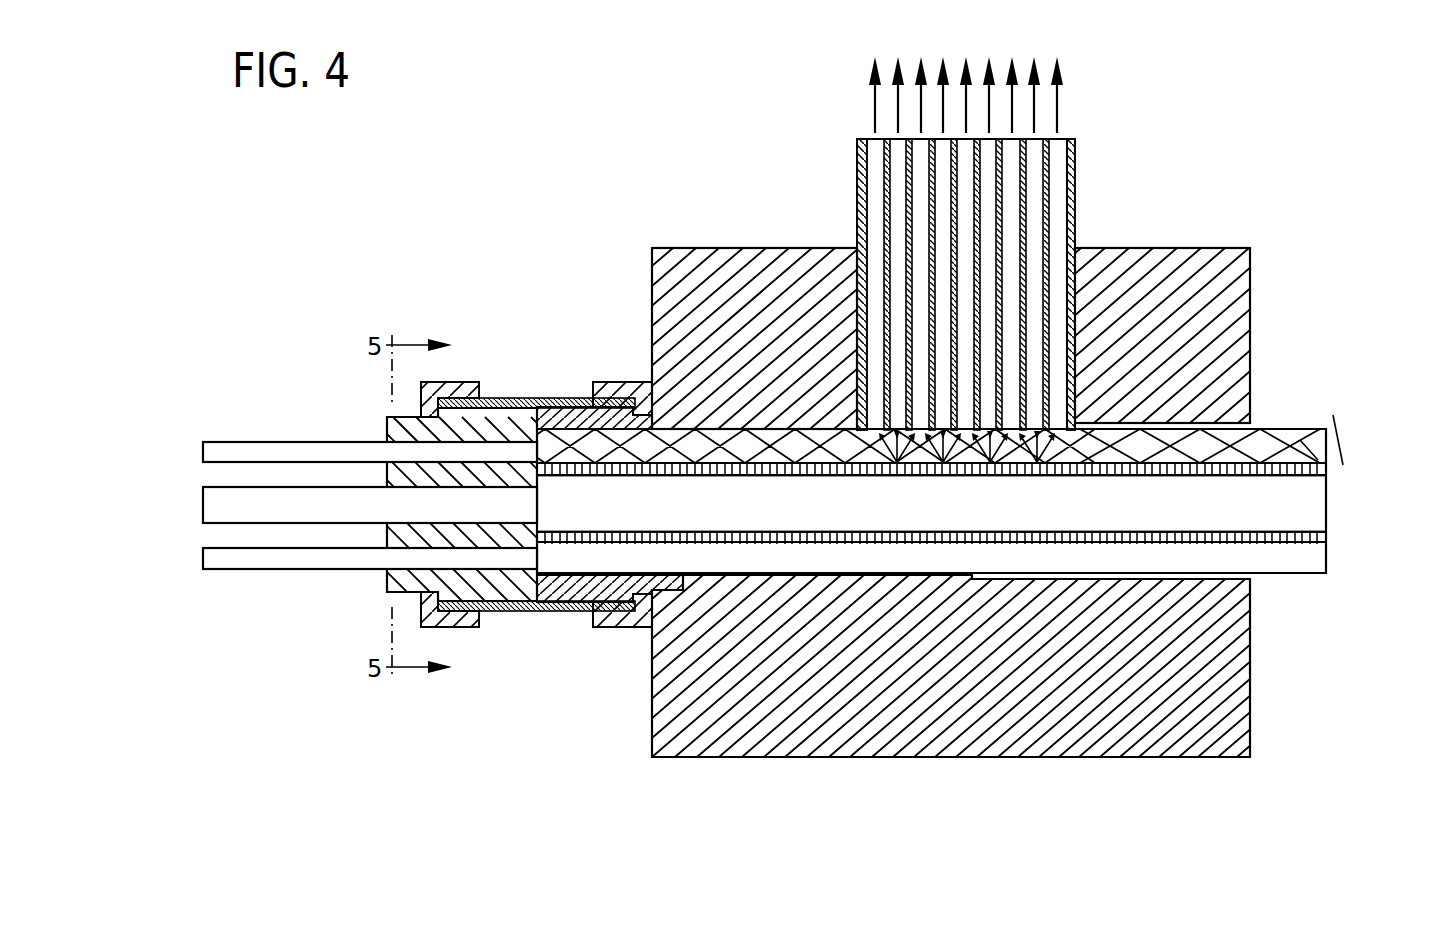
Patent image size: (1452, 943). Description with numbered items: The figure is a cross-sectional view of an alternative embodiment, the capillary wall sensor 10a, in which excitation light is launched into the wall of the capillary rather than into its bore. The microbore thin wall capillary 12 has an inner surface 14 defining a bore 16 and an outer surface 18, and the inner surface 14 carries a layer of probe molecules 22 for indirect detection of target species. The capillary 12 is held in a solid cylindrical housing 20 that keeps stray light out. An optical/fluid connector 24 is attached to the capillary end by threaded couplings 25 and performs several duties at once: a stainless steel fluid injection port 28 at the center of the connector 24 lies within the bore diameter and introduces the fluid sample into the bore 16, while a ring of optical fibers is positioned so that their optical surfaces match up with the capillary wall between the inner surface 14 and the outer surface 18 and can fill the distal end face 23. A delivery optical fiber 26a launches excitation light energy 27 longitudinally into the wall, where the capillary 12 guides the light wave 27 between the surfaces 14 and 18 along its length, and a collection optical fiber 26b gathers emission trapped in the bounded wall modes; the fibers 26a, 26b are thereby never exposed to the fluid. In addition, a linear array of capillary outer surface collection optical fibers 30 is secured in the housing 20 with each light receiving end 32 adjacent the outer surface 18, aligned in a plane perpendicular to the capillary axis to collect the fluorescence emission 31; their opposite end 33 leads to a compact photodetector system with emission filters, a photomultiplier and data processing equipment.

The capillary wall sensor 10a is at (608, 186).
The microbore thin wall capillary 12 is at (1257, 427).
The inner surface 14 is at (1308, 475).
The bore 16 is at (1313, 517).
The outer surface 18 is at (1317, 427).
The cylindrical housing 20 is at (1185, 248).
The layer of probe molecules 22 is at (1318, 460).
The distal end face 23 is at (530, 398).
The optical/fluid connector 24 is at (386, 588).
The threaded couplings 25 is at (593, 613).
The delivery optical fiber 26a is at (218, 440).
The collection optical fiber 26b is at (222, 572).
The excitation light energy 27 is at (578, 427).
The fluid injection port 28 is at (203, 503).
The capillary outer surface collection optical fiber 30 is at (1010, 180).
The fluorescence emission 31 is at (873, 122).
The light receiving end 32 is at (1055, 415).
The opposite end 33 is at (1058, 139).